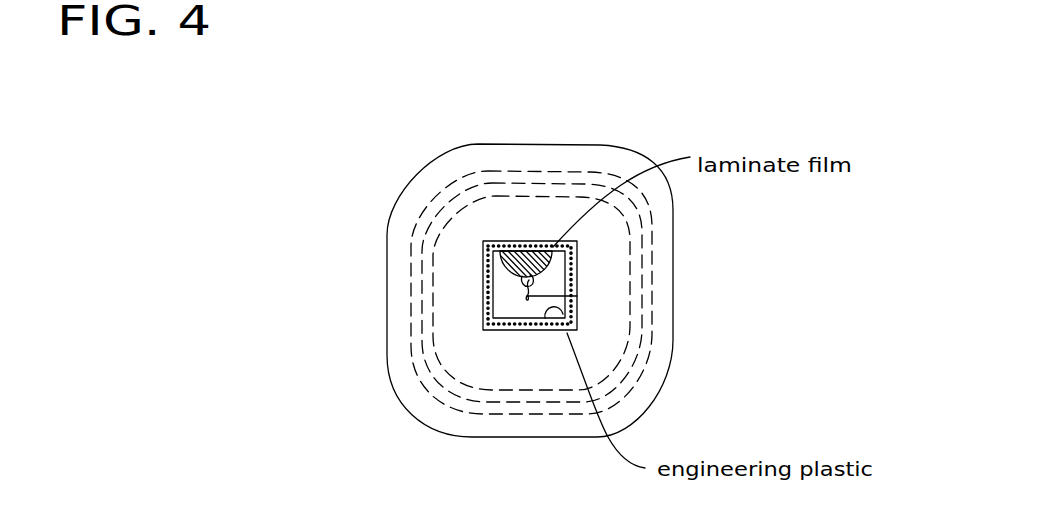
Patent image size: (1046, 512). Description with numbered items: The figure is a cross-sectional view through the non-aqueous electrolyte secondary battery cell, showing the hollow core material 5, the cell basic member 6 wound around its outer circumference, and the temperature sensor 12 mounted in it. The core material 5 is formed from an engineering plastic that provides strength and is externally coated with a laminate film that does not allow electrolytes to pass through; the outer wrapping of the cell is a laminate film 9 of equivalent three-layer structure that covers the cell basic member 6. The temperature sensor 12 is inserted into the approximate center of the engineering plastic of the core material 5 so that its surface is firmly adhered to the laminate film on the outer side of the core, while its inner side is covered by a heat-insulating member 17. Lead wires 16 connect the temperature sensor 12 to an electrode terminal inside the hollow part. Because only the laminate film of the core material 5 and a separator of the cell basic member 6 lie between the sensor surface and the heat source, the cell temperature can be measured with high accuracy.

The laminate film 9 is at (538, 145).
The core material 5 is at (577, 273).
The temperature sensor 12 is at (520, 262).
The lead wires 16 is at (577, 296).
The heat-insulating member 17 is at (518, 272).
The cell basic member 6 is at (540, 378).